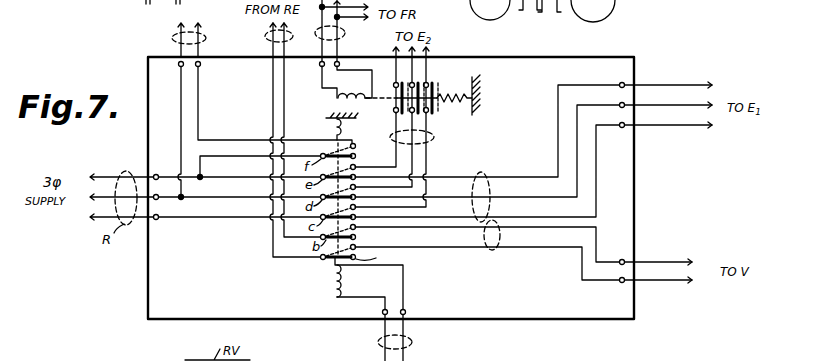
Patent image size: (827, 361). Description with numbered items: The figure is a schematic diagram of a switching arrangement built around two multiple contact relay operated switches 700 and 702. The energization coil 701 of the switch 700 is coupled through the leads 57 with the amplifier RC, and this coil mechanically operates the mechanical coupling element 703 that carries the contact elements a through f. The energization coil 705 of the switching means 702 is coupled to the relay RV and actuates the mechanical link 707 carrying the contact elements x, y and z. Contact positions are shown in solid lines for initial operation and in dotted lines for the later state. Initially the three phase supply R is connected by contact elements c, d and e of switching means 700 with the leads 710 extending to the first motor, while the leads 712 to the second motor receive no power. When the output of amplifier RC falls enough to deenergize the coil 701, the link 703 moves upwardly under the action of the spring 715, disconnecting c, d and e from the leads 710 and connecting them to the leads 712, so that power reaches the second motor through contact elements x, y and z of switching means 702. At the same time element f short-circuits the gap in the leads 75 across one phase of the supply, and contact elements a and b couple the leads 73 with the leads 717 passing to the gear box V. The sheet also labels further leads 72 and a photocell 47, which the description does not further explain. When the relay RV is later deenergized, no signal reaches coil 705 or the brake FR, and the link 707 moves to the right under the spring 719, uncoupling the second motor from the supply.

The photocell 47 is at (167, 45).
The leads 75 is at (206, 40).
The leads 73 is at (265, 36).
The cable to FR 72 is at (345, 35).
The energization coil 705 is at (362, 103).
The spring 715 is at (330, 126).
The mechanical coupling element 703 is at (335, 268).
The multiple contact relay operated switch 700 is at (316, 266).
The leads 710 is at (480, 172).
The leads 717 is at (512, 250).
The multiple contact relay operated switch 702 is at (446, 87).
The mechanical link 707 is at (438, 105).
The spring 719 is at (466, 104).
The leads 712 is at (433, 142).
The energization coil 701 is at (331, 301).
The leads 57 is at (412, 343).